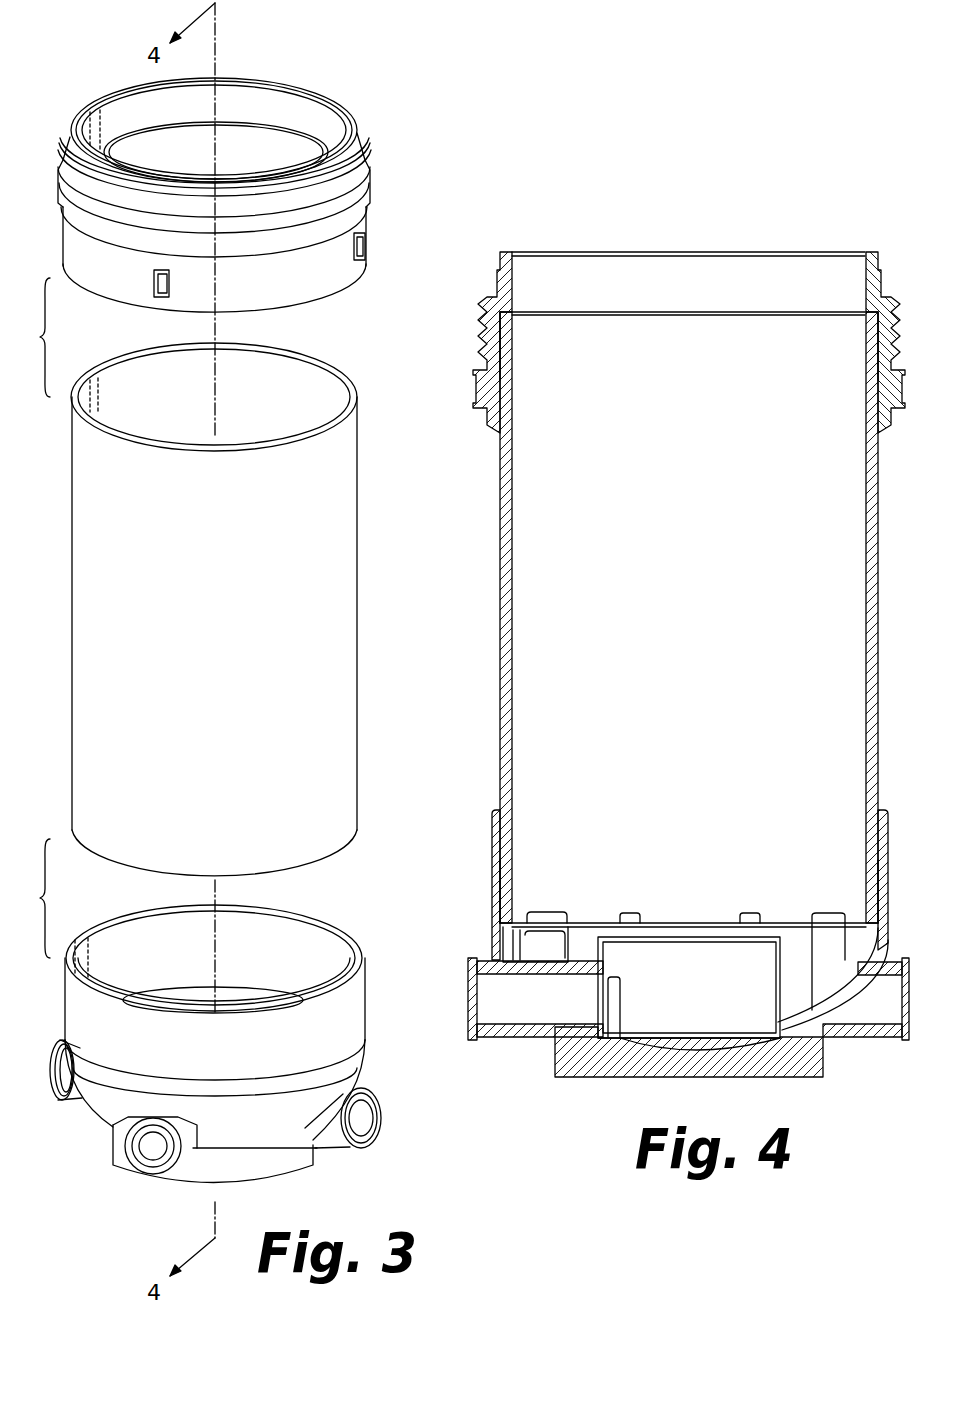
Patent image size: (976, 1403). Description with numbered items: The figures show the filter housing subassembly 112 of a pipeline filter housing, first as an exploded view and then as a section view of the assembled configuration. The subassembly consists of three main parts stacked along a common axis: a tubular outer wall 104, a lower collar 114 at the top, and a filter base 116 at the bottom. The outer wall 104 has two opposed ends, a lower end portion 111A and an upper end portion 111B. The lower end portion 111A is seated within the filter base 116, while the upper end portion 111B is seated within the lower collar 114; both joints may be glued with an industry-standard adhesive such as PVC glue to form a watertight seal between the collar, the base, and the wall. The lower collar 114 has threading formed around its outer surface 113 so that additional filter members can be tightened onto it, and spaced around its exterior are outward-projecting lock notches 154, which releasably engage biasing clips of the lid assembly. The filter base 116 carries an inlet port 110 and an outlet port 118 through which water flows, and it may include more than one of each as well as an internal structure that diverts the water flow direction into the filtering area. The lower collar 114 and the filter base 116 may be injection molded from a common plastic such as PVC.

In FIG. 3, the outer wall 104 is at (315, 567).
In FIG. 4, the outer wall 104 is at (876, 600).
In FIG. 4, the inlet port 110 is at (907, 998).
In FIG. 3, the lower end portion 111A is at (378, 802).
In FIG. 4, the lower end portion 111A is at (873, 857).
In FIG. 3, the upper end portion 111B is at (378, 418).
In FIG. 4, the upper end portion 111B is at (873, 364).
In FIG. 4, the filter housing subassembly 112 is at (689, 634).
In FIG. 3, the outer surface 113 is at (376, 184).
In FIG. 4, the outer surface 113 is at (904, 331).
In FIG. 3, the lower collar 114 is at (280, 284).
In FIG. 4, the lower collar 114 is at (877, 293).
In FIG. 3, the filter base 116 is at (337, 1022).
In FIG. 4, the filter base 116 is at (580, 1062).
In FIG. 4, the outlet port 118 is at (470, 1003).
In FIG. 3, the lock notches 154 is at (152, 278).